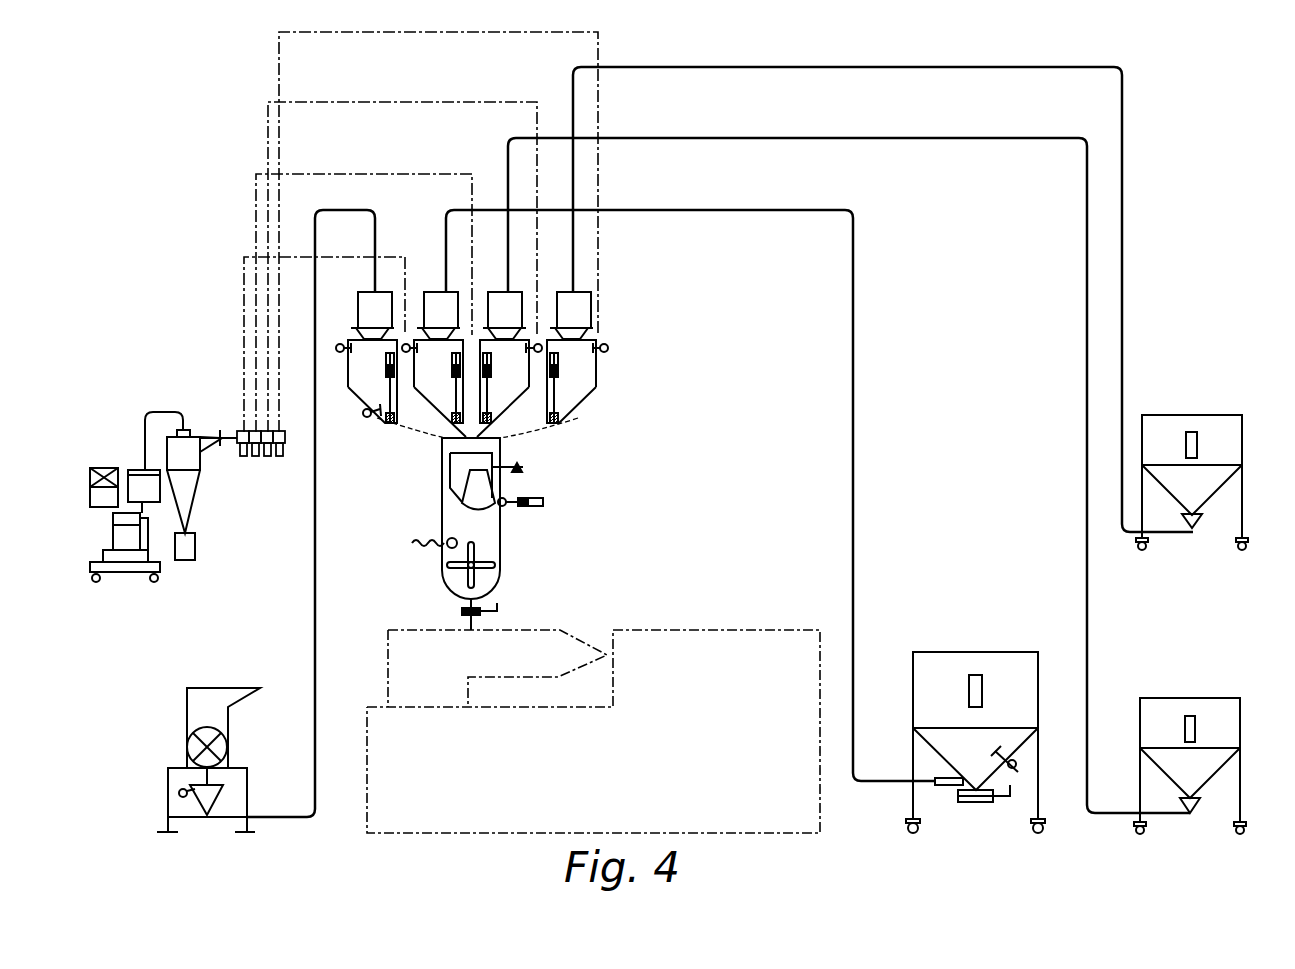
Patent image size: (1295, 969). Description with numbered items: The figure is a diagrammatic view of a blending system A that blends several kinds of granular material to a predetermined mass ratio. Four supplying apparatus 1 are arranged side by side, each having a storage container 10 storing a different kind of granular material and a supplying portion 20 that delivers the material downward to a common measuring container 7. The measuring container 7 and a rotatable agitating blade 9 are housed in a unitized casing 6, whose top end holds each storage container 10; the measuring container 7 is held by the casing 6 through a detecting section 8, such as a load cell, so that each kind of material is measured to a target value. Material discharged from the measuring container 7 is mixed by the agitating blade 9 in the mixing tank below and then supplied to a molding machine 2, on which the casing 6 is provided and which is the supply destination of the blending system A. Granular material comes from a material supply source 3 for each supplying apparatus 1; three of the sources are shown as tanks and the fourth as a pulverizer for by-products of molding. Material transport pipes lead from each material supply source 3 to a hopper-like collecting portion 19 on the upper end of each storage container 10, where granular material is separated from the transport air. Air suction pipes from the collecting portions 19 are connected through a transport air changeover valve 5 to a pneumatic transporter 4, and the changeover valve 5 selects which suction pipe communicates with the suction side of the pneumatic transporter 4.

The blending system A is at (205, 73).
The supplying apparatus 1 is at (347, 427).
The molding machine 2 is at (668, 623).
The material supply source 3 is at (228, 683).
The pneumatic transporter 4 is at (124, 432).
The transport air changeover valve 5 is at (260, 468).
The casing 6 is at (500, 517).
The measuring container 7 is at (452, 492).
The detecting section 8 is at (524, 469).
The agitating blade 9 is at (485, 555).
The storage container 10 is at (428, 370).
The collecting portion 19 is at (432, 298).
The supplying portion 20 is at (445, 357).